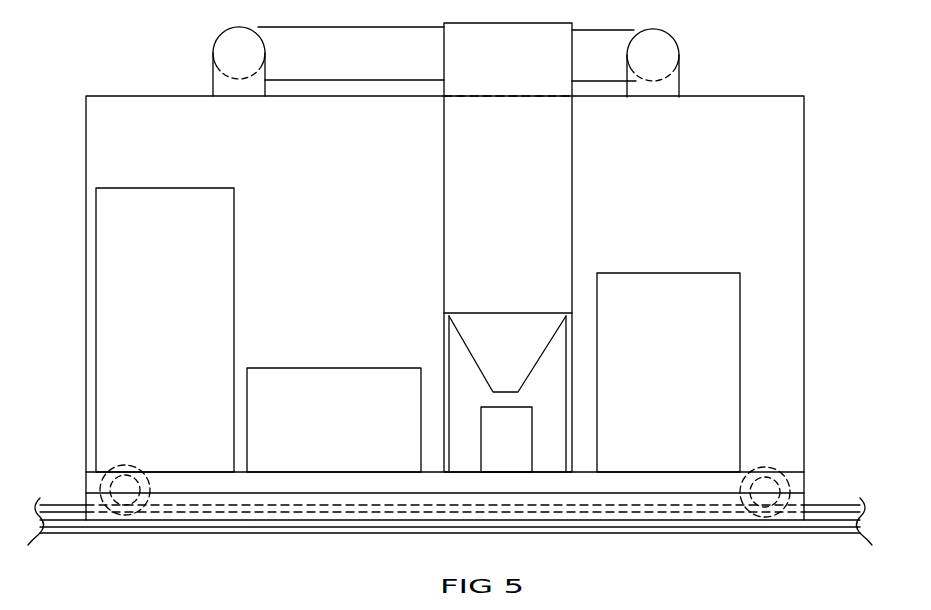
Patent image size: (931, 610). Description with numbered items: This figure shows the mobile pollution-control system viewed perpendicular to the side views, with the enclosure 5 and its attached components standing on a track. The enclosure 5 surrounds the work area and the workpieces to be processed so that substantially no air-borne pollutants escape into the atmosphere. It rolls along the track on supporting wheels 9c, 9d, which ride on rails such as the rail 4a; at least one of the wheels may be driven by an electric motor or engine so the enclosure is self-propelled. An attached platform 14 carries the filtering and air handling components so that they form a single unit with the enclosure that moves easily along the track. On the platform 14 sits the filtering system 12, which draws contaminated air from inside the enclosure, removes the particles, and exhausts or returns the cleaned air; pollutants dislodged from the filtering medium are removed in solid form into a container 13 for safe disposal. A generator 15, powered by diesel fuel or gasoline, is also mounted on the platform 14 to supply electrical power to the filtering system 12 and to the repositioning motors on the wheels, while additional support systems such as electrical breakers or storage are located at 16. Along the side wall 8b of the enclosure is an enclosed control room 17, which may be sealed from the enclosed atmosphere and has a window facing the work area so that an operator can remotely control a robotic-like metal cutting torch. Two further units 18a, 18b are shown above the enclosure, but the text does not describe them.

The rail 4a is at (782, 522).
The enclosure 5 is at (299, 556).
The side wall 8b is at (445, 308).
The supporting wheel 9c is at (772, 488).
The supporting wheel 9d is at (140, 497).
The filtering system 12 is at (508, 247).
The container 13 is at (506, 439).
The platform 14 is at (445, 483).
The generator 15 is at (334, 420).
The storage area 16 is at (165, 330).
The control room 17 is at (668, 372).
The conveyor 18a is at (625, 63).
The conveyor 18b is at (328, 61).